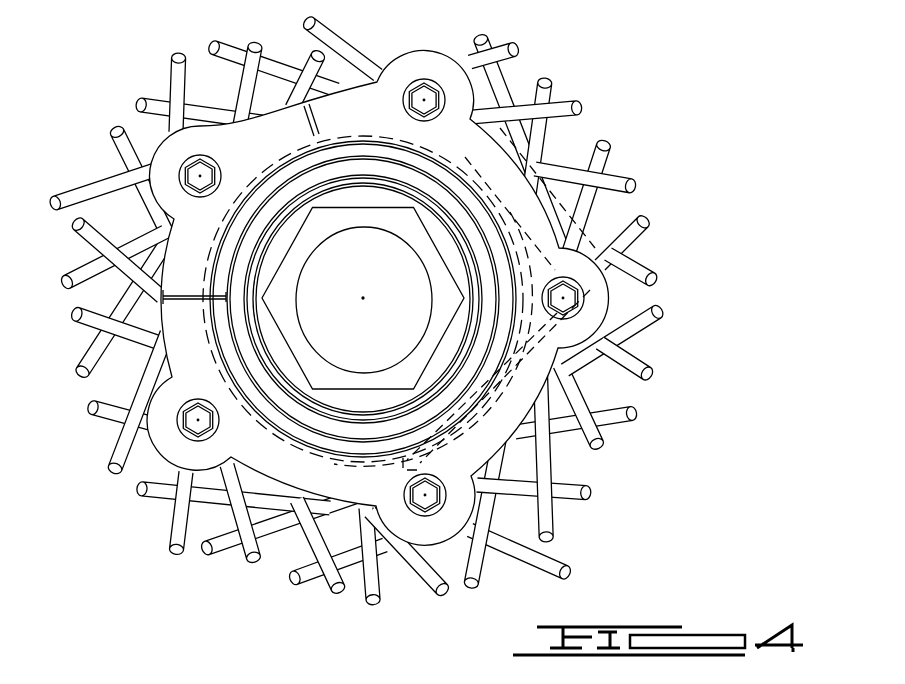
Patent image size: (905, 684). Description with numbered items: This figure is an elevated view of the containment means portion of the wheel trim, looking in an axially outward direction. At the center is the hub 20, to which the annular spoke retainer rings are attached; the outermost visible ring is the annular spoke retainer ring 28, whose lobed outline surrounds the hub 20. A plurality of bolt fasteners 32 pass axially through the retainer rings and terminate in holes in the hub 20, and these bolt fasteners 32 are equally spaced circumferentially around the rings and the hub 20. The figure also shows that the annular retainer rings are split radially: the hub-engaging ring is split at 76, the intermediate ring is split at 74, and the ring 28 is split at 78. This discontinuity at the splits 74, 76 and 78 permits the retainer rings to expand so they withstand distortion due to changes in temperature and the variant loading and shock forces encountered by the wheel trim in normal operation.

The hub 20 is at (363, 299).
The annular spoke retainer ring 28 is at (187, 367).
The bolt fasteners 32 is at (425, 79).
The radial split 74 is at (308, 136).
The radial split 76 is at (299, 408).
The radial split 78 is at (160, 297).